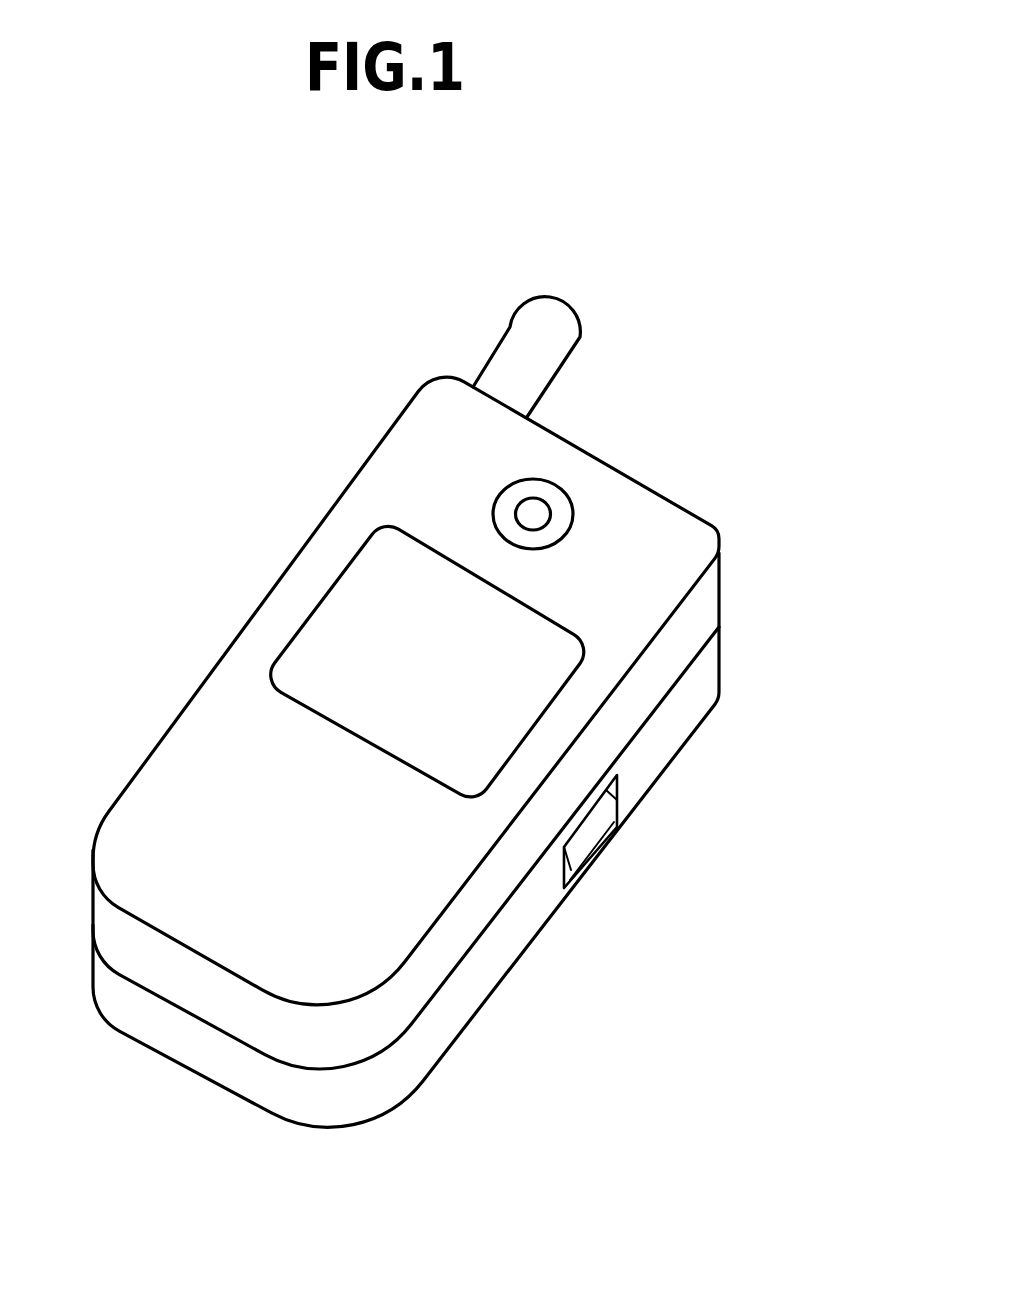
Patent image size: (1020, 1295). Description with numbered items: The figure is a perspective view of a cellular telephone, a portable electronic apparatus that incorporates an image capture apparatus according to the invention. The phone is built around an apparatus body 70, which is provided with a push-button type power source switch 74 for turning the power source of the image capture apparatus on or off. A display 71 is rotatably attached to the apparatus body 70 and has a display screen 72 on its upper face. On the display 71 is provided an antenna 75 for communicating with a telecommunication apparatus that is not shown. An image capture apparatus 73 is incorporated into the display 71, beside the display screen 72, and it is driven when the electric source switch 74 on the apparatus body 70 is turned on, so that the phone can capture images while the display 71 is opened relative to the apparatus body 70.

The apparatus body 70 is at (468, 997).
The display 71 is at (177, 715).
The display screen 72 is at (338, 575).
The image capture apparatus 73 is at (557, 503).
The push-button type power source switch 74 is at (593, 822).
The antenna 75 is at (555, 338).